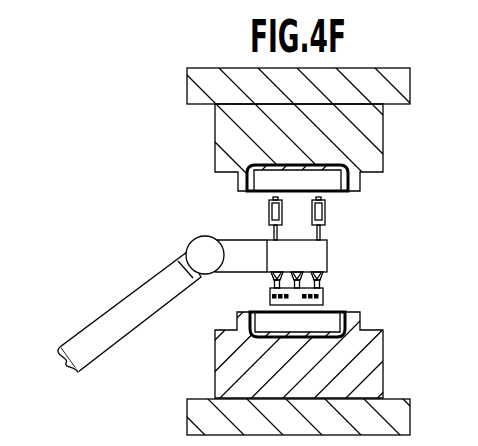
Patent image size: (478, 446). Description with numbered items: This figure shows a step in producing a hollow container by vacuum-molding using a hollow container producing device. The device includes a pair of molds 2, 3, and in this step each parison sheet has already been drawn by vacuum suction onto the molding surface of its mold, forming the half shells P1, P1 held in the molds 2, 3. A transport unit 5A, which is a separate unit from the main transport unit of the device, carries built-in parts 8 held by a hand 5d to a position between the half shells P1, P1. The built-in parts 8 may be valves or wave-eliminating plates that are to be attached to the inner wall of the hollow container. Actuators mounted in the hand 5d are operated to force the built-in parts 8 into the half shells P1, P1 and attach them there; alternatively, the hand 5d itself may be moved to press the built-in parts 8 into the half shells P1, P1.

The mold 3 is at (360, 137).
The mold 2 is at (360, 368).
The half shell P1 is at (330, 190).
The transport unit 5A is at (100, 245).
The hand 5d is at (284, 258).
The built-in parts 8 is at (325, 216).